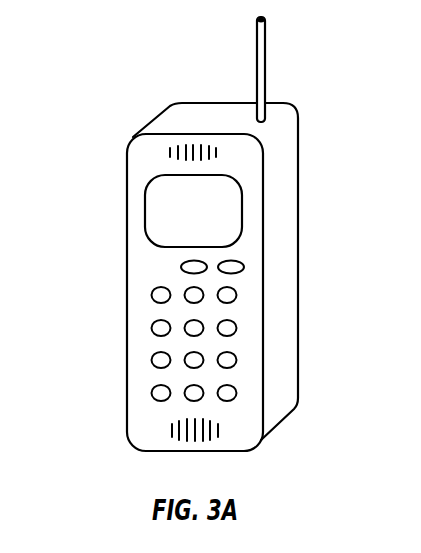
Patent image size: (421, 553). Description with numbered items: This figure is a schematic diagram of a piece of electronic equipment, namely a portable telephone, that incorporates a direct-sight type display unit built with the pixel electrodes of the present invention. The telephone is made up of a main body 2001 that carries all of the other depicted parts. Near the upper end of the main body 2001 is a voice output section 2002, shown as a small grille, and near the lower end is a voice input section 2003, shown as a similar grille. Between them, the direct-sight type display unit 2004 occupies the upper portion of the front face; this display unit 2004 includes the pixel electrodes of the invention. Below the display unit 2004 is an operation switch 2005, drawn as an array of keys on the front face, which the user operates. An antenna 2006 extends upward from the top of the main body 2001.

The main body 2001 is at (184, 112).
The voice output section 2002 is at (180, 148).
The voice input section 2003 is at (193, 438).
The direct-sight type display unit 2004 is at (157, 208).
The operation switch 2005 is at (155, 288).
The antenna 2006 is at (265, 62).